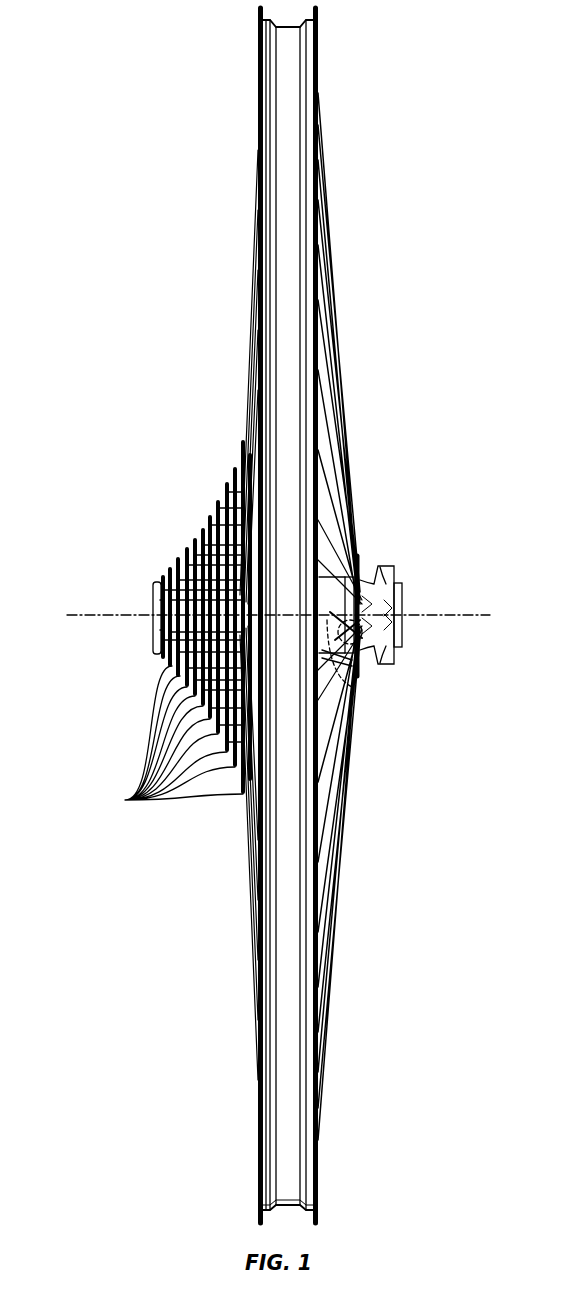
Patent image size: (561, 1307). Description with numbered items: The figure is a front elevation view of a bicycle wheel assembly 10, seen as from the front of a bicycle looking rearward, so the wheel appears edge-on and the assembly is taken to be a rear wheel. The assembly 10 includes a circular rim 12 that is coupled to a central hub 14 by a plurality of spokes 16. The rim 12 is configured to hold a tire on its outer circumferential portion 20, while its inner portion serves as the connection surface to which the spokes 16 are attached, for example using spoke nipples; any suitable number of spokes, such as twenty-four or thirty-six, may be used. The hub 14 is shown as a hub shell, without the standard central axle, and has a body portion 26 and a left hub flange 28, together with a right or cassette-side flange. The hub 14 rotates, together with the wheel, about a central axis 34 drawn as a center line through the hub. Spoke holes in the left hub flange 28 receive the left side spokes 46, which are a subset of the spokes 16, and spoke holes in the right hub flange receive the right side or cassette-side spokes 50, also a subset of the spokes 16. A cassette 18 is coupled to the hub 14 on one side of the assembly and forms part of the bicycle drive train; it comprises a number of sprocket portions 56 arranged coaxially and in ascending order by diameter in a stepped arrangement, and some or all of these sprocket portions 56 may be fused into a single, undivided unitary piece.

The bicycle wheel assembly 10 is at (83, 293).
The rim 12 is at (318, 48).
The hub 14 is at (330, 592).
The spokes 16 is at (379, 303).
The cassette 18 is at (179, 509).
The outer circumferential portion 20 is at (330, 1203).
The body portion 26 is at (352, 687).
The left hub flange 28 is at (356, 647).
The central axis 34 is at (452, 612).
The spokes 46 is at (367, 407).
The spokes 50 is at (241, 414).
The sprocket portions 56 is at (171, 739).